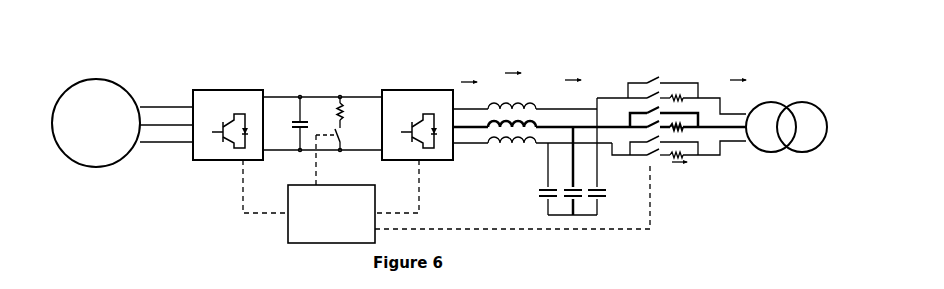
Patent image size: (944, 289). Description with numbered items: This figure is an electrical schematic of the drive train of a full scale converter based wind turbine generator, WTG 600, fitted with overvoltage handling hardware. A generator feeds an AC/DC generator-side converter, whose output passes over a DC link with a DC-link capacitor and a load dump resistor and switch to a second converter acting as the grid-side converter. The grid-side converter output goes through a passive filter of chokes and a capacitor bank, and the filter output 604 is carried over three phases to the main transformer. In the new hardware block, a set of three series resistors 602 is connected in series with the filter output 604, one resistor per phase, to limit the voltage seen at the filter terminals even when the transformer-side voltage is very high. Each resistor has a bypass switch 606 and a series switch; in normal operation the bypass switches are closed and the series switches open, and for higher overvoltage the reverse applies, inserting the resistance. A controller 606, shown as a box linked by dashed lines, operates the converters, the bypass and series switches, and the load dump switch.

The WTG 600 is at (111, 54).
The series resistors 602 is at (650, 83).
The filter output 604 is at (565, 107).
The bypass switch 606 is at (288, 239).